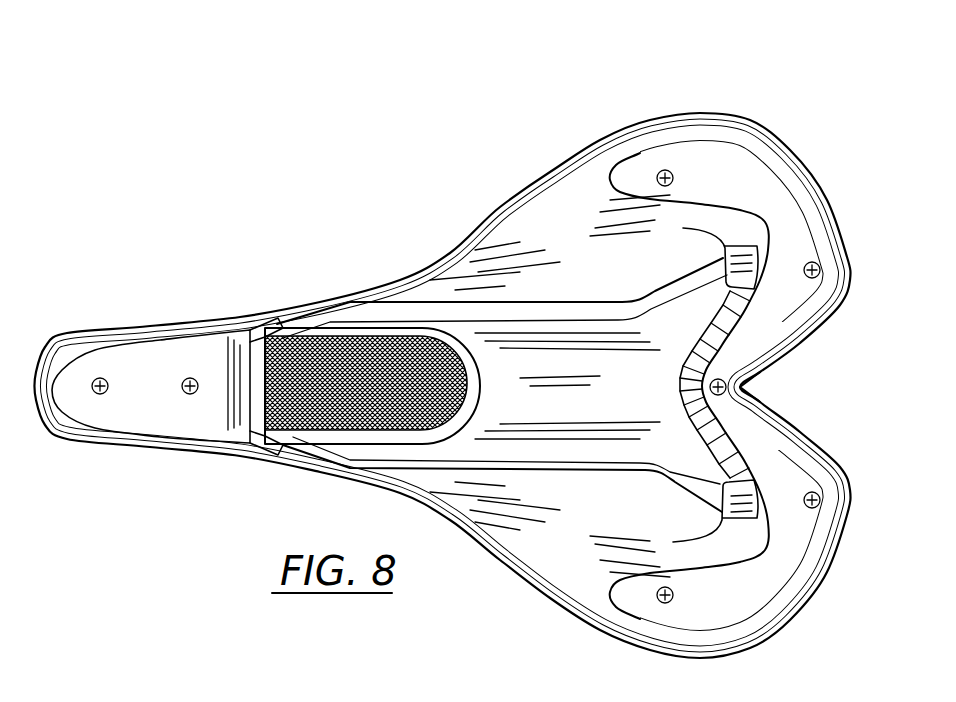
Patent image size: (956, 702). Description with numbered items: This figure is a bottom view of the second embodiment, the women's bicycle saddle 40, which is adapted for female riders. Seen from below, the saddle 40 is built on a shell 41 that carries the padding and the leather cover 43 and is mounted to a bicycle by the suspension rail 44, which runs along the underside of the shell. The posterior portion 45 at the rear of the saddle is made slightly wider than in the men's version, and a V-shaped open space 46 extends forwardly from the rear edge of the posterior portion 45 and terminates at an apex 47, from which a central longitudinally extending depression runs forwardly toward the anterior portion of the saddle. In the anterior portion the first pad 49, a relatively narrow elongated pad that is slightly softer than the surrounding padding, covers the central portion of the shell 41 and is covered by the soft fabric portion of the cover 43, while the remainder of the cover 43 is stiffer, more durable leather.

The women's bicycle saddle 40 is at (253, 278).
The shell 41 is at (597, 227).
The leather cover 43 is at (206, 274).
The suspension rail 44 is at (610, 453).
The posterior portion 45 is at (700, 113).
The V-shaped open space 46 is at (778, 390).
The apex 47 is at (737, 375).
The first pad 49 is at (358, 352).